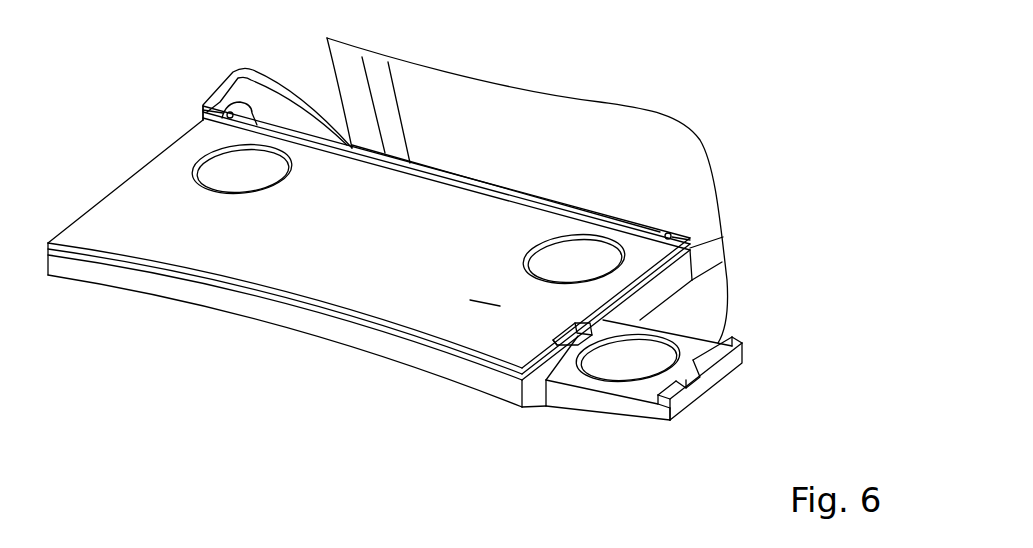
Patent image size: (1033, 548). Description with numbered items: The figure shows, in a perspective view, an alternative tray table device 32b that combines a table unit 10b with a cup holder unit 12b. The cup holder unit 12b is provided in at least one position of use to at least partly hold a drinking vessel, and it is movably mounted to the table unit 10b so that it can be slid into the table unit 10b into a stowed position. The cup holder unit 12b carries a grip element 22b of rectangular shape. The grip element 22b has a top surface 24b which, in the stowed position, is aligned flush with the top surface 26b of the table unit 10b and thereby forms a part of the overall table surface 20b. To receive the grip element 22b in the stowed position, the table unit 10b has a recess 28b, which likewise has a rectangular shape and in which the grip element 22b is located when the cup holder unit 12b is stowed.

The table unit 10b is at (133, 320).
The table surface 20b is at (498, 272).
The top surface of the table unit 26b is at (495, 302).
The recess 28b is at (556, 332).
The cup holder unit 12b is at (744, 372).
The grip element 22b is at (722, 343).
The top surface of the grip element 24b is at (698, 367).
The tray table device 32b is at (127, 132).